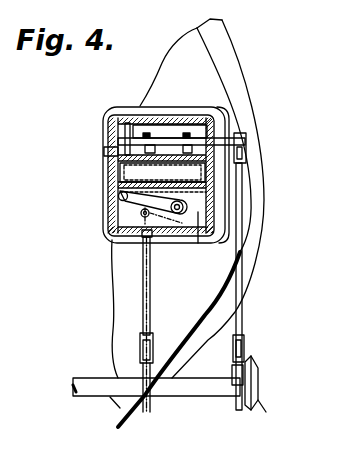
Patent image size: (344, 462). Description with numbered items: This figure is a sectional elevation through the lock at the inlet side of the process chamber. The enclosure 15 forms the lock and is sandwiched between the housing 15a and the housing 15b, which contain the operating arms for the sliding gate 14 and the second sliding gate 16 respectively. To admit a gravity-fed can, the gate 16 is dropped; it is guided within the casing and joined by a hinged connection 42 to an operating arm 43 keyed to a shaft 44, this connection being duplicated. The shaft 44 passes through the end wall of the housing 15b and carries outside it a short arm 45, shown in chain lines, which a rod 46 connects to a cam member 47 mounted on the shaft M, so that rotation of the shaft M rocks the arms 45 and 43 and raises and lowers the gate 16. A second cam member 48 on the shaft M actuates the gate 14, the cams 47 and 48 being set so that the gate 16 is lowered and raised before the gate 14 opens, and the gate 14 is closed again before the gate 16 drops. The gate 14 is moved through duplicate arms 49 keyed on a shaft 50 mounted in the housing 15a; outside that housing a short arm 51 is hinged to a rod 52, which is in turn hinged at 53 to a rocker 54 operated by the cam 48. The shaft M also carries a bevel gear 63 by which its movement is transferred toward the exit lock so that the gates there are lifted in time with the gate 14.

The sliding gate 14 is at (150, 170).
The enclosure 15 is at (131, 122).
The housing 15a is at (176, 130).
The housing 15b is at (198, 243).
The second sliding gate 16 is at (112, 170).
The hinged connection 42 is at (120, 199).
The operating arm 43 is at (143, 215).
The shaft 44 is at (151, 291).
The short arm 45 is at (151, 237).
The rod 46 is at (143, 305).
The cam member 47 is at (115, 372).
The cam member 48 is at (237, 373).
The duplicate arms 49 is at (149, 134).
The shaft 50 is at (214, 108).
The short arm 51 is at (248, 150).
The rod 52 is at (242, 291).
The hinged connection 53 is at (232, 343).
The rocker 54 is at (245, 357).
The bevel gear 63 is at (258, 406).
The shaft M is at (190, 392).